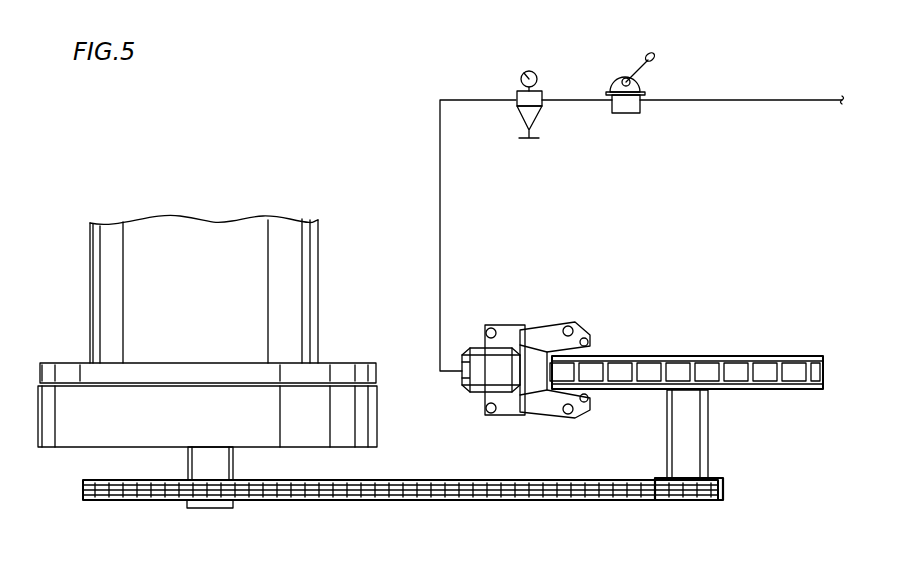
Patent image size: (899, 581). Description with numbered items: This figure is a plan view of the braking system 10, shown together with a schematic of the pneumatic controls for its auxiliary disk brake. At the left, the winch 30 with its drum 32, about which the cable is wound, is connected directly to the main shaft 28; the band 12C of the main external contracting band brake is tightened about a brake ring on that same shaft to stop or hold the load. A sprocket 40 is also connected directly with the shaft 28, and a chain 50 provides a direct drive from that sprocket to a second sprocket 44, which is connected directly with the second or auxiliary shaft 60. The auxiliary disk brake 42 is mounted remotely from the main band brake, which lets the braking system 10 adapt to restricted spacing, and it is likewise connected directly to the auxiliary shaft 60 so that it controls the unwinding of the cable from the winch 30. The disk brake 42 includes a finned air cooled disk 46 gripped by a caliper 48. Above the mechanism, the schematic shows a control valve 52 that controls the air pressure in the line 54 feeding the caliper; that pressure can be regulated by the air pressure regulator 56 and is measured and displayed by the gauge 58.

The brake system 10 is at (402, 240).
The band 12C is at (370, 417).
The shaft 28 is at (190, 458).
The winch 30 is at (100, 283).
The drum 32 is at (124, 210).
The sprocket 40 is at (312, 508).
The auxiliary disk brake 42 is at (700, 352).
The sprocket 44 is at (715, 500).
The finned air cooled disk 46 is at (765, 357).
The caliper 48 is at (518, 322).
The chain 50 is at (492, 500).
The control valve 52 is at (645, 80).
The line 54 is at (440, 230).
The air pressure regulator 56 is at (522, 128).
The gauge 58 is at (535, 72).
The auxiliary shaft 60 is at (697, 443).